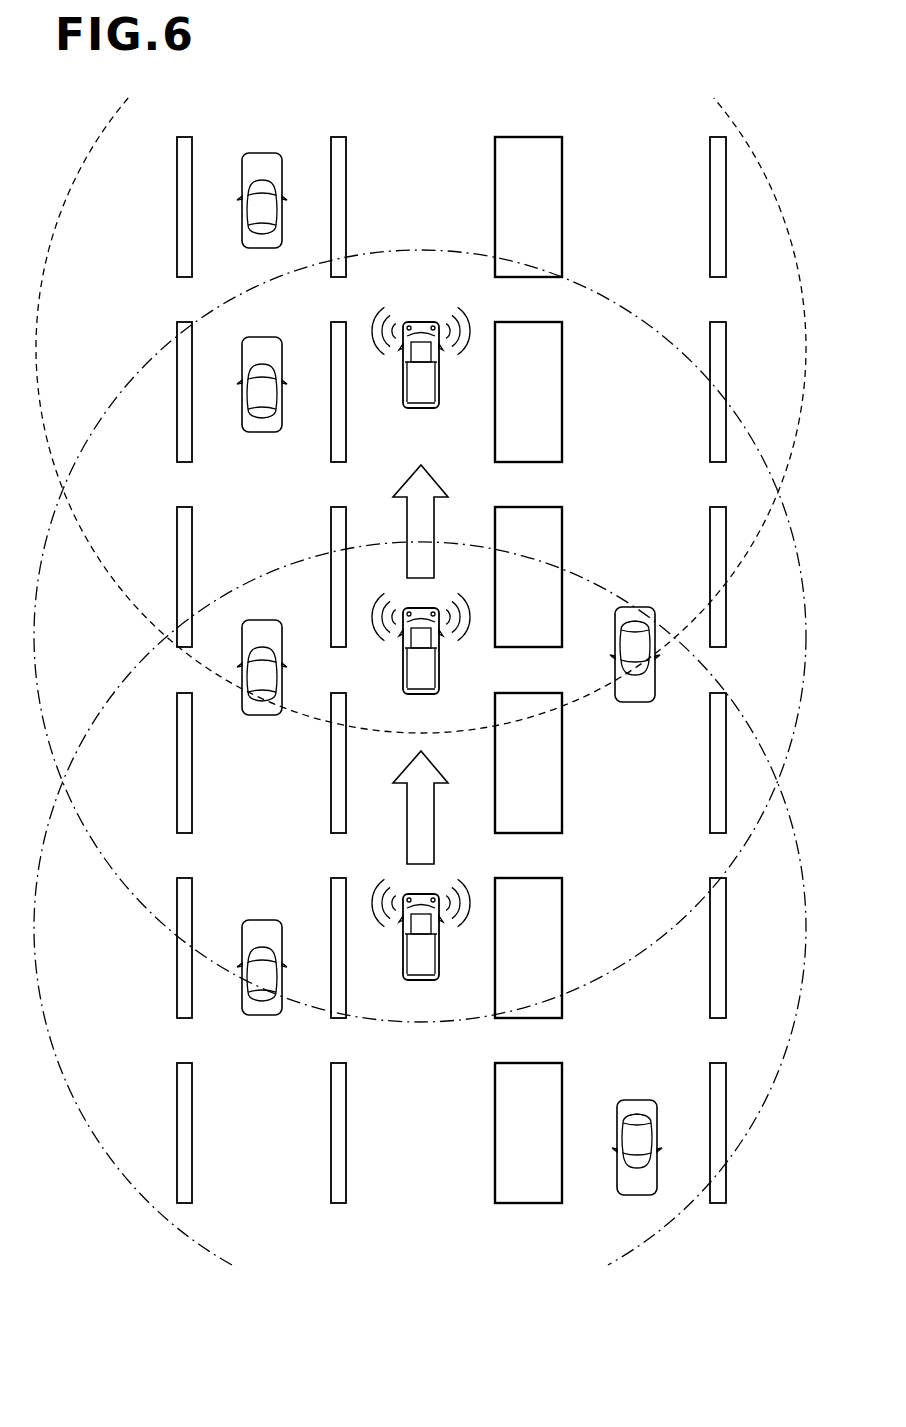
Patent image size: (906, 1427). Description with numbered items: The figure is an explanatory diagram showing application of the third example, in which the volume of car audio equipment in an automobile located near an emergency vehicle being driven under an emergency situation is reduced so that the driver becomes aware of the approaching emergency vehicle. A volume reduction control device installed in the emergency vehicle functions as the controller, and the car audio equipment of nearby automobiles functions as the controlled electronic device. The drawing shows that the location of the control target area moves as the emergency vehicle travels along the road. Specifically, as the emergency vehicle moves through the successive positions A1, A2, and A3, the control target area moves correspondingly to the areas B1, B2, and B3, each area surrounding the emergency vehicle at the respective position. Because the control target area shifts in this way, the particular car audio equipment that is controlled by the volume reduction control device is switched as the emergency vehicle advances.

The position A1 is at (439, 962).
The position A2 is at (438, 674).
The position A3 is at (421, 410).
The area B1 is at (81, 1113).
The area B2 is at (122, 884).
The area B3 is at (110, 117).